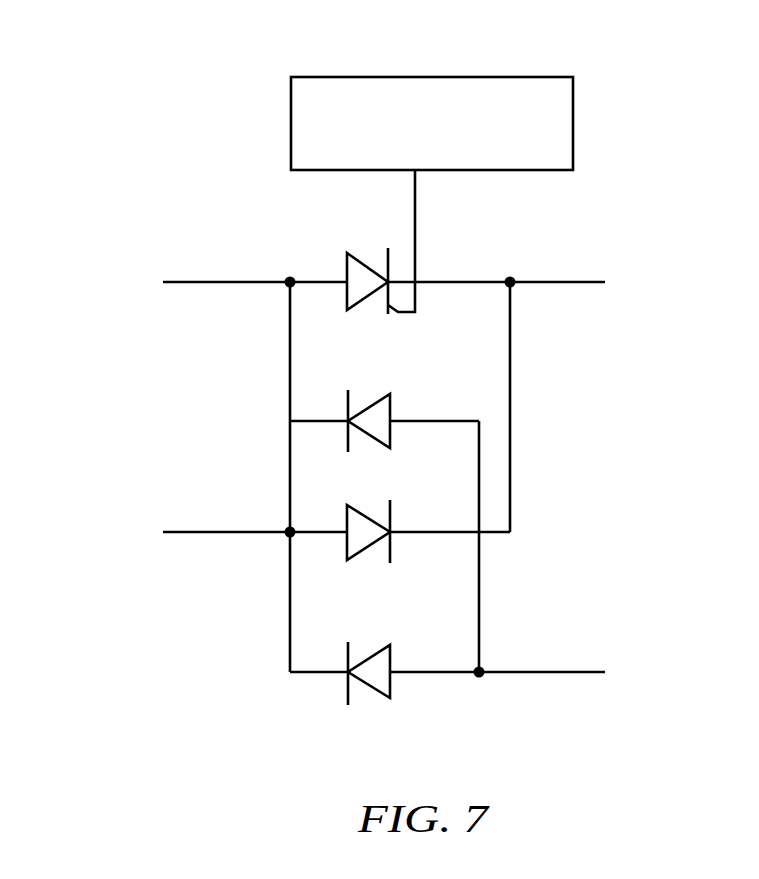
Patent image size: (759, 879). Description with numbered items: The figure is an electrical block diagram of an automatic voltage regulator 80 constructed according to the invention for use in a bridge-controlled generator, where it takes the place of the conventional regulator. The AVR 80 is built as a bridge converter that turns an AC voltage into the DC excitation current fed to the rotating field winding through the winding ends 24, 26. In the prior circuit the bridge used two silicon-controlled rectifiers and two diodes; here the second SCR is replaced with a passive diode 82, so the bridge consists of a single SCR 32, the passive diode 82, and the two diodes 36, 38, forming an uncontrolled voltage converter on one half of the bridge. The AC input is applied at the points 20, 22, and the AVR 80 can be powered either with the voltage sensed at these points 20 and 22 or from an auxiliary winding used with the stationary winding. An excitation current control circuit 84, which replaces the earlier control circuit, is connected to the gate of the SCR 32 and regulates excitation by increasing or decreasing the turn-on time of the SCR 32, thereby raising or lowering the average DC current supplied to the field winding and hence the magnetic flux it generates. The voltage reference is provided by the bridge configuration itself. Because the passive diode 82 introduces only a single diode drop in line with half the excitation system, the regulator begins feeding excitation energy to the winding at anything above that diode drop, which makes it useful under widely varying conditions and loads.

The automatic voltage regulator 80 is at (635, 92).
The excitation current control circuit 84 is at (557, 172).
The voltage sensing point 22 is at (180, 283).
The winding end 26 is at (588, 283).
The voltage sensing point 20 is at (180, 533).
The winding end 24 is at (590, 673).
The silicon-controlled rectifier 32 is at (369, 297).
The passive diode 82 is at (369, 437).
The diode 36 is at (369, 547).
The diode 38 is at (369, 688).